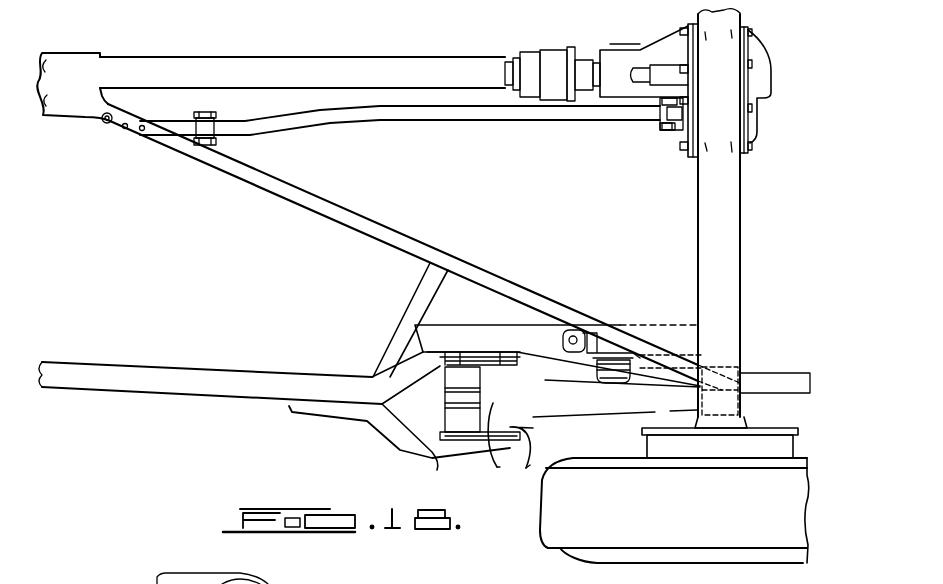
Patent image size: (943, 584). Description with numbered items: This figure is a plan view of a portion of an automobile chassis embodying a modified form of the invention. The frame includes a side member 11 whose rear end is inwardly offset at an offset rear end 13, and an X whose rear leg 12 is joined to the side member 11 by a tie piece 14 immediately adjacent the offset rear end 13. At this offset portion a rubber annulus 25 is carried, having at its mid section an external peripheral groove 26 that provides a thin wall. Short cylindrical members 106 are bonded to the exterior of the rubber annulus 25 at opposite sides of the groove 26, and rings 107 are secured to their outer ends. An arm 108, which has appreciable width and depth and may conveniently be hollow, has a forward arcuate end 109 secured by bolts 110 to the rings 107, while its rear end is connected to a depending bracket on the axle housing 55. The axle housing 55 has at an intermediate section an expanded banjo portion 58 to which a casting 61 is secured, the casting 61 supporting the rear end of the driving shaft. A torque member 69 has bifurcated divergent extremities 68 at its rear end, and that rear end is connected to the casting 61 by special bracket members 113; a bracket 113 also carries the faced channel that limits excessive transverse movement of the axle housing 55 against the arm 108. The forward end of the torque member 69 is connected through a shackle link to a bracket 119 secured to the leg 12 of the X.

The side member 11 is at (212, 392).
The rear leg 12 is at (392, 229).
The offset rear end 13 is at (533, 325).
The tie piece 14 is at (260, 144).
The rubber annulus 25 is at (450, 394).
The external peripheral groove 26 is at (450, 407).
The axle housing 55 is at (729, 214).
The banjo portion 58 is at (732, 123).
The casting 61 is at (626, 50).
The bifurcated divergent extremity 68 is at (660, 112).
The torque member 69 is at (587, 121).
The short cylindrical member 106 is at (455, 379).
The ring 107 is at (425, 354).
The arm 108 is at (583, 443).
The forward arcuate end 109 is at (497, 463).
The bolt 110 is at (490, 424).
The bracket 113 is at (662, 128).
The bracket 119 is at (174, 115).